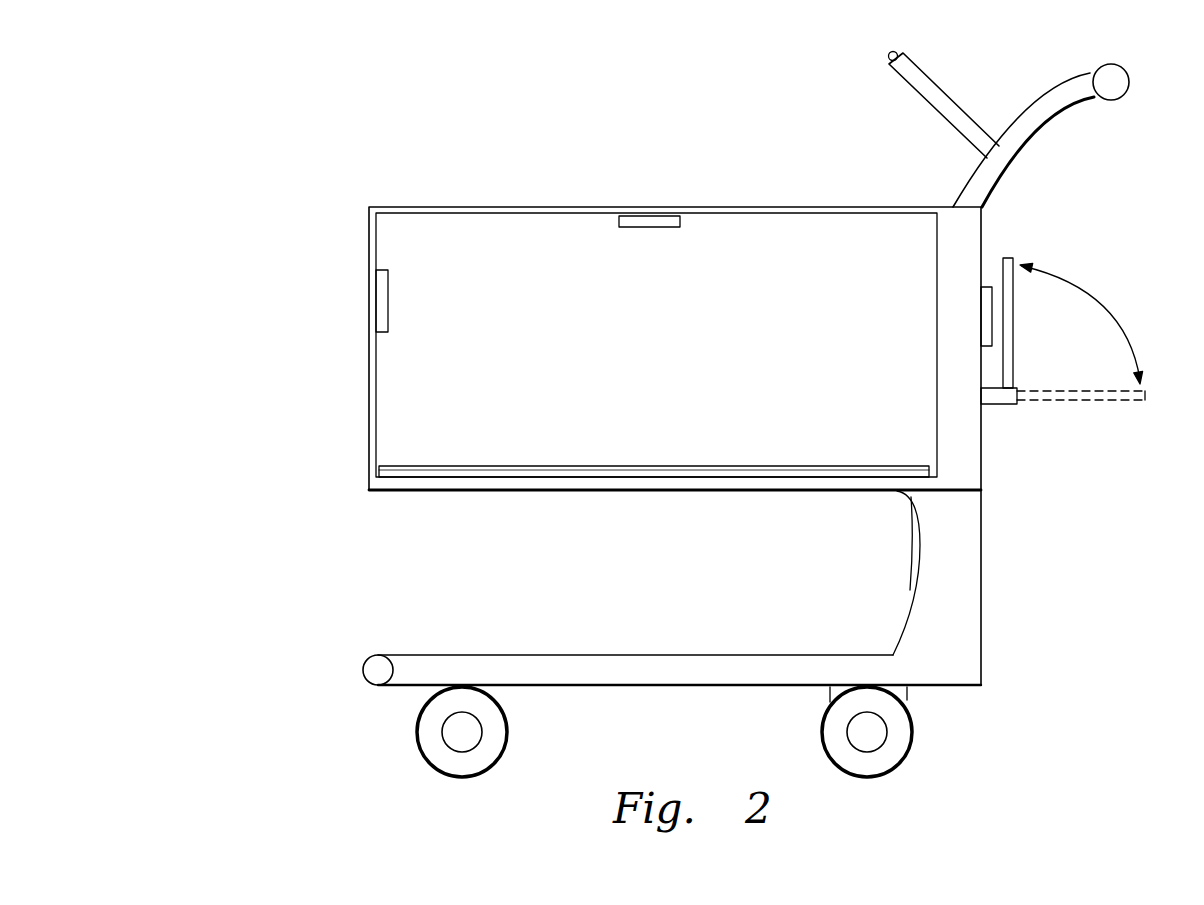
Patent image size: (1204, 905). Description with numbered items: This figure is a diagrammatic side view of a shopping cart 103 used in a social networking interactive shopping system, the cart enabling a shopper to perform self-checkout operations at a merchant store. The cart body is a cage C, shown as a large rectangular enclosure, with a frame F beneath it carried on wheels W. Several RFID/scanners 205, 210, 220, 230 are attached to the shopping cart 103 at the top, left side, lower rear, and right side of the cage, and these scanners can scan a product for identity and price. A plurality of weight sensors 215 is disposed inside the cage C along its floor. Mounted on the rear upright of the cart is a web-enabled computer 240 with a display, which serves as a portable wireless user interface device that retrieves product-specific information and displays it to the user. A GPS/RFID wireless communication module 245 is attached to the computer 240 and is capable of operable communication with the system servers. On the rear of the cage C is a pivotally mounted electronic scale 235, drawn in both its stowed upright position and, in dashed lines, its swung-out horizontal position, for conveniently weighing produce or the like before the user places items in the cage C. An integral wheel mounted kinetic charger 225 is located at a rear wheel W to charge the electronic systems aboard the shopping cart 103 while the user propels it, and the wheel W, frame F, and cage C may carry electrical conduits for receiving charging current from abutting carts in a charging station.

The shopping cart 103 is at (230, 130).
The RFID/scanner 205 is at (643, 220).
The RFID/scanner 210 is at (382, 300).
The weight sensor 215 is at (620, 466).
The RFID/scanner 220 is at (912, 544).
The wheel mounted kinetic charger 225 is at (907, 697).
The RFID/scanner 230 is at (992, 332).
The pivotally mounted electronic scale 235 is at (1008, 258).
The web-enabled computer 240 is at (947, 93).
The GPS/RFID wireless communication module 245 is at (888, 56).
The cage C is at (368, 427).
The frame F is at (600, 655).
The wheel W is at (415, 727).